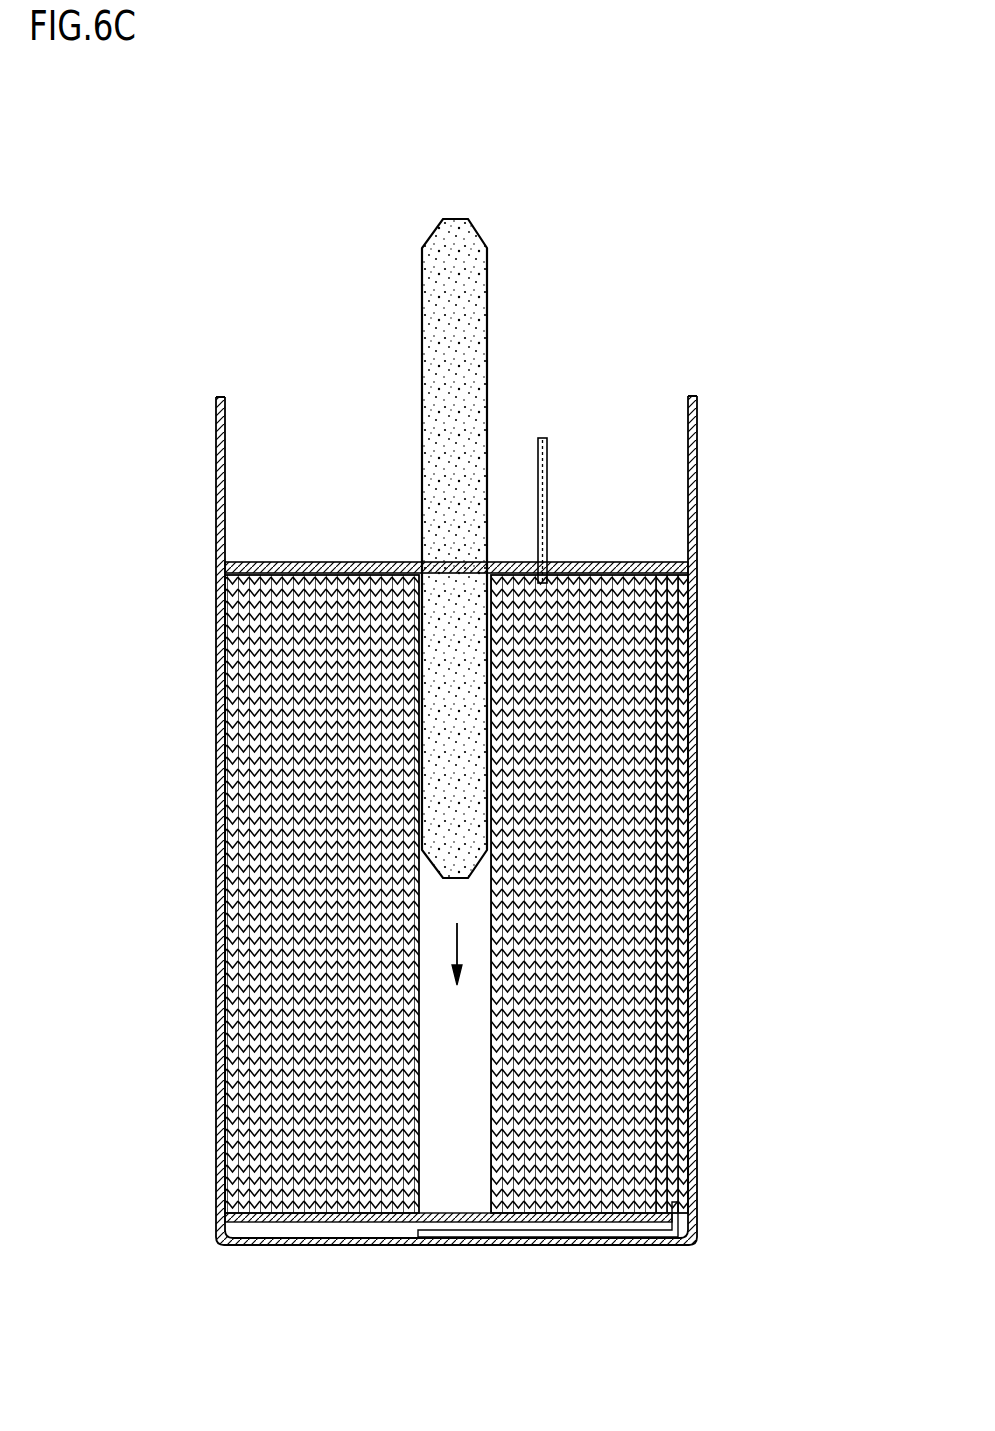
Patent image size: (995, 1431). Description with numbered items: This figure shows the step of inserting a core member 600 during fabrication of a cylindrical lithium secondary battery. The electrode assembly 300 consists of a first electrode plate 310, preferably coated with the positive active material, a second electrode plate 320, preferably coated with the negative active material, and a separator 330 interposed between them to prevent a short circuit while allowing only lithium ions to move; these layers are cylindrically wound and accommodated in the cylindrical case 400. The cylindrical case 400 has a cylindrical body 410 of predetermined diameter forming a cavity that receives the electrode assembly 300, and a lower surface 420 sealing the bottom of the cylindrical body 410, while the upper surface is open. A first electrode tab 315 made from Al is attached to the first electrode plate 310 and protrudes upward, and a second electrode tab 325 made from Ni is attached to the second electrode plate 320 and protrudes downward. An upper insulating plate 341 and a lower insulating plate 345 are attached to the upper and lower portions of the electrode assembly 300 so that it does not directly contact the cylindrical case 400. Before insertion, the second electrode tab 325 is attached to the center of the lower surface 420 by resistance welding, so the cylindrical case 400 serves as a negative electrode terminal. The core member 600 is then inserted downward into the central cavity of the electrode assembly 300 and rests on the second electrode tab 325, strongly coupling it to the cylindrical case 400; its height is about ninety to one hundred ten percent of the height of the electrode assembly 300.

The core member 600 is at (455, 228).
The first electrode tab 315 is at (547, 480).
The upper insulating plate 341 is at (628, 562).
The cylindrical body 410 is at (697, 600).
The electrode assembly 300 is at (547, 894).
The second electrode plate 320 is at (678, 700).
The separator 330 is at (667, 750).
The first electrode plate 310 is at (656, 800).
The cylindrical case 400 is at (536, 835).
The lower surface 420 is at (636, 1245).
The lower insulating plate 345 is at (371, 1222).
The second electrode tab 325 is at (541, 1245).